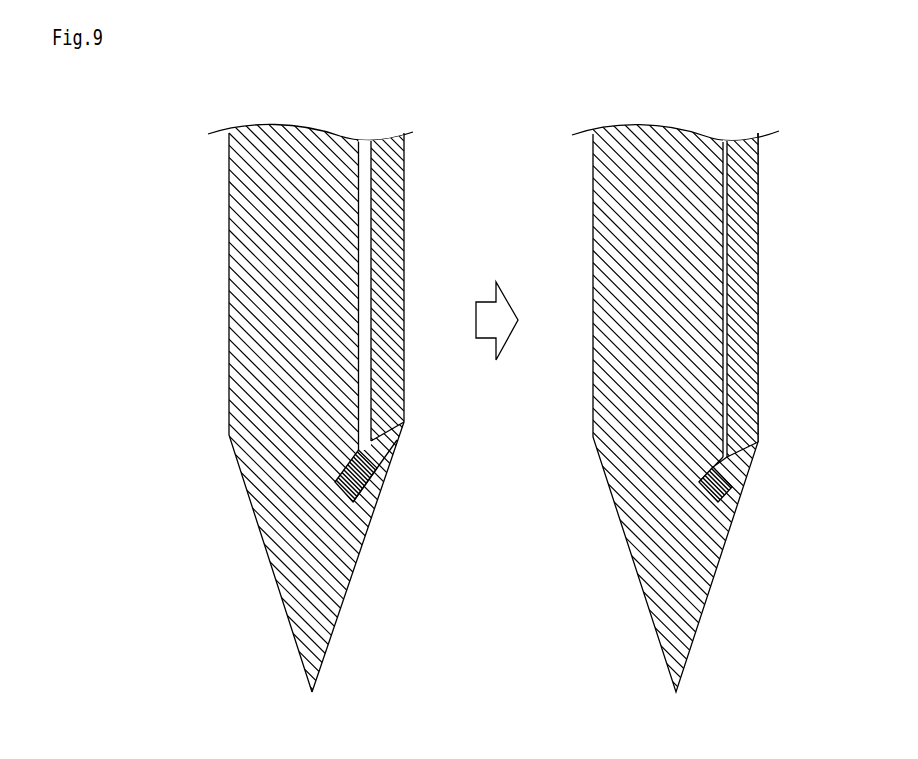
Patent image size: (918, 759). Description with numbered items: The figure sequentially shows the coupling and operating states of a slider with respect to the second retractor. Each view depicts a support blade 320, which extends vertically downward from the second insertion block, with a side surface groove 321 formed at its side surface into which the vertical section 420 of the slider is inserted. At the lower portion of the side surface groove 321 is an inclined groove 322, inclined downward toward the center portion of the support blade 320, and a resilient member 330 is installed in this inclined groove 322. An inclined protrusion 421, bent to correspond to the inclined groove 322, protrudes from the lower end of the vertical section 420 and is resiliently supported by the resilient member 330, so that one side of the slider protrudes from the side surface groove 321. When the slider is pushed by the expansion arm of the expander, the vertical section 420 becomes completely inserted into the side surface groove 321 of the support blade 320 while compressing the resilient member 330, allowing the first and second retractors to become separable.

The support blade 320 is at (243, 300).
The side surface groove 321 is at (365, 189).
The inclined groove 322 is at (335, 481).
The resilient member 330 is at (378, 487).
The vertical section 420 is at (404, 233).
The inclined protrusion 421 is at (378, 445).